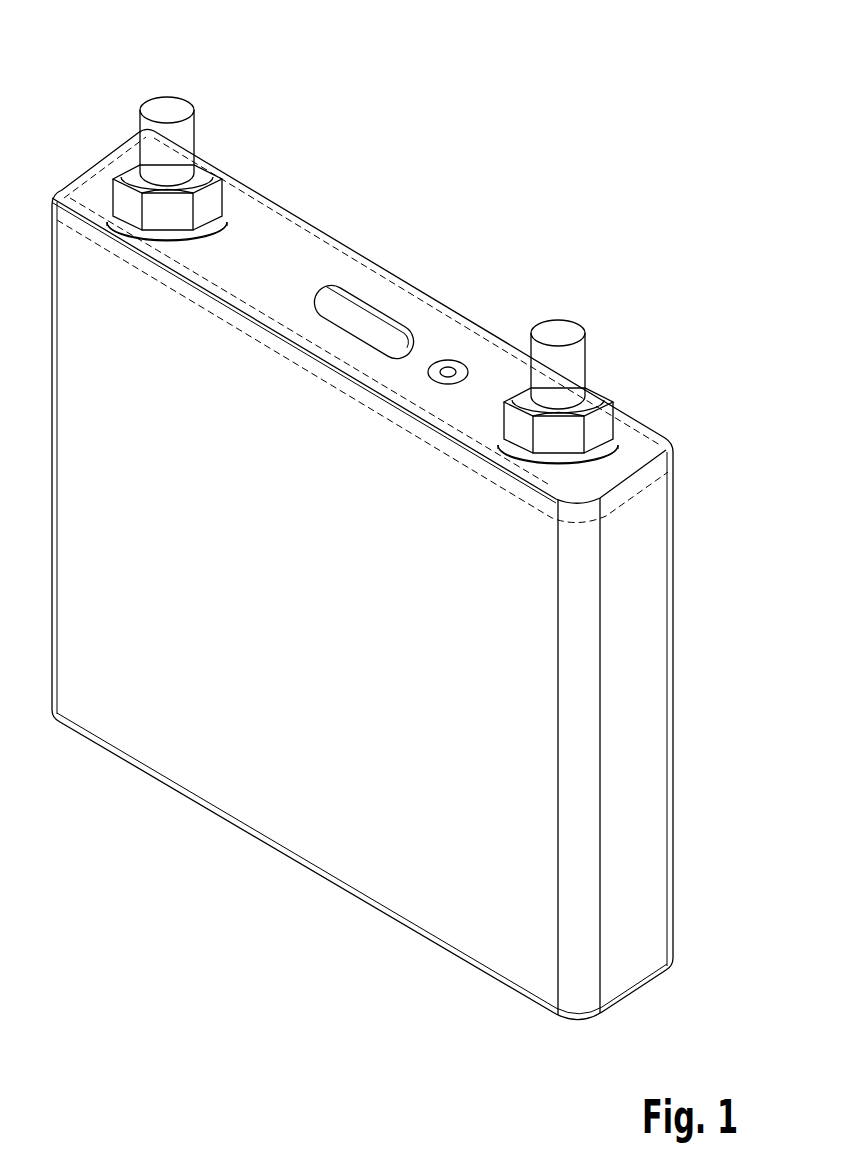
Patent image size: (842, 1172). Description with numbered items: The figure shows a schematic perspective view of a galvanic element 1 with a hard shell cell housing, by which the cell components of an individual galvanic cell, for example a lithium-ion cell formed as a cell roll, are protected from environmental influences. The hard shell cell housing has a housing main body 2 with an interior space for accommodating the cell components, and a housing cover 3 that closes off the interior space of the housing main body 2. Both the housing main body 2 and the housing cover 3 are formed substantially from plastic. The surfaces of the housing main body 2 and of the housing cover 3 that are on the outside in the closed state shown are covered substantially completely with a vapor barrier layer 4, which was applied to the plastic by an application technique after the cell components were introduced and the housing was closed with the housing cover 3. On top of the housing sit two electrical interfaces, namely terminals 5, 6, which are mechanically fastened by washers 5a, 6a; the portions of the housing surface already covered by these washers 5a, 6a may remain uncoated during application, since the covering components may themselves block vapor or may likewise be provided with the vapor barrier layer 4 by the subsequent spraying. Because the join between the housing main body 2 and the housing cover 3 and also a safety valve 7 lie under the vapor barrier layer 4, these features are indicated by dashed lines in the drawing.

The galvanic element 1 is at (536, 80).
The housing main body 2 is at (665, 640).
The housing cover 3 is at (320, 258).
The vapor barrier layer 4 is at (424, 326).
The electrical interface (terminal) 5 is at (168, 104).
The washer 5a is at (232, 206).
The electrical interface (terminal) 6 is at (558, 328).
The washer 6a is at (618, 440).
The safety valve 7 is at (373, 320).